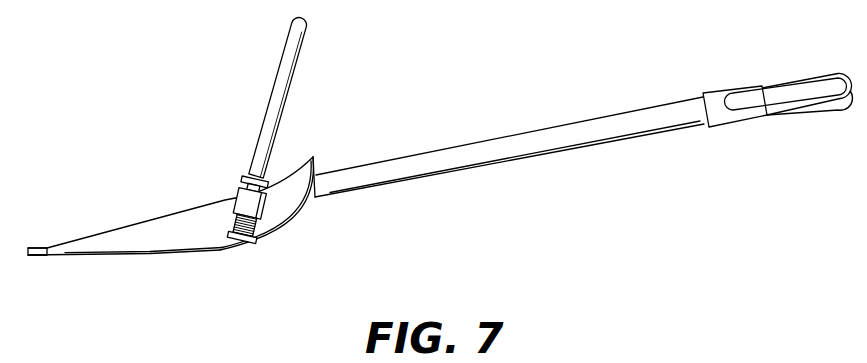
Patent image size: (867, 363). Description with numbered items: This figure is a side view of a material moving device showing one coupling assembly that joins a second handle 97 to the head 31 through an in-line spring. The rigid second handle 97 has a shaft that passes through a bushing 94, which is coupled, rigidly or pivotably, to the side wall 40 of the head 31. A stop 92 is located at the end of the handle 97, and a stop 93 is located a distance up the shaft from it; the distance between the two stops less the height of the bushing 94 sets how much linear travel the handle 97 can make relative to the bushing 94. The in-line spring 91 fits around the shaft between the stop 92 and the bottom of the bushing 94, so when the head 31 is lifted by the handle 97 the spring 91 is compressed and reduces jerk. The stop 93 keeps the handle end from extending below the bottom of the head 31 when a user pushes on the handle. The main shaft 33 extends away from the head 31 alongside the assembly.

The head 31 is at (87, 262).
The shaft 33 is at (563, 126).
The side wall 40 is at (135, 237).
The in-line spring 91 is at (282, 221).
The stop 92 is at (256, 243).
The stop 93 is at (247, 176).
The bushing 94 is at (235, 205).
The second handle 97 is at (298, 83).